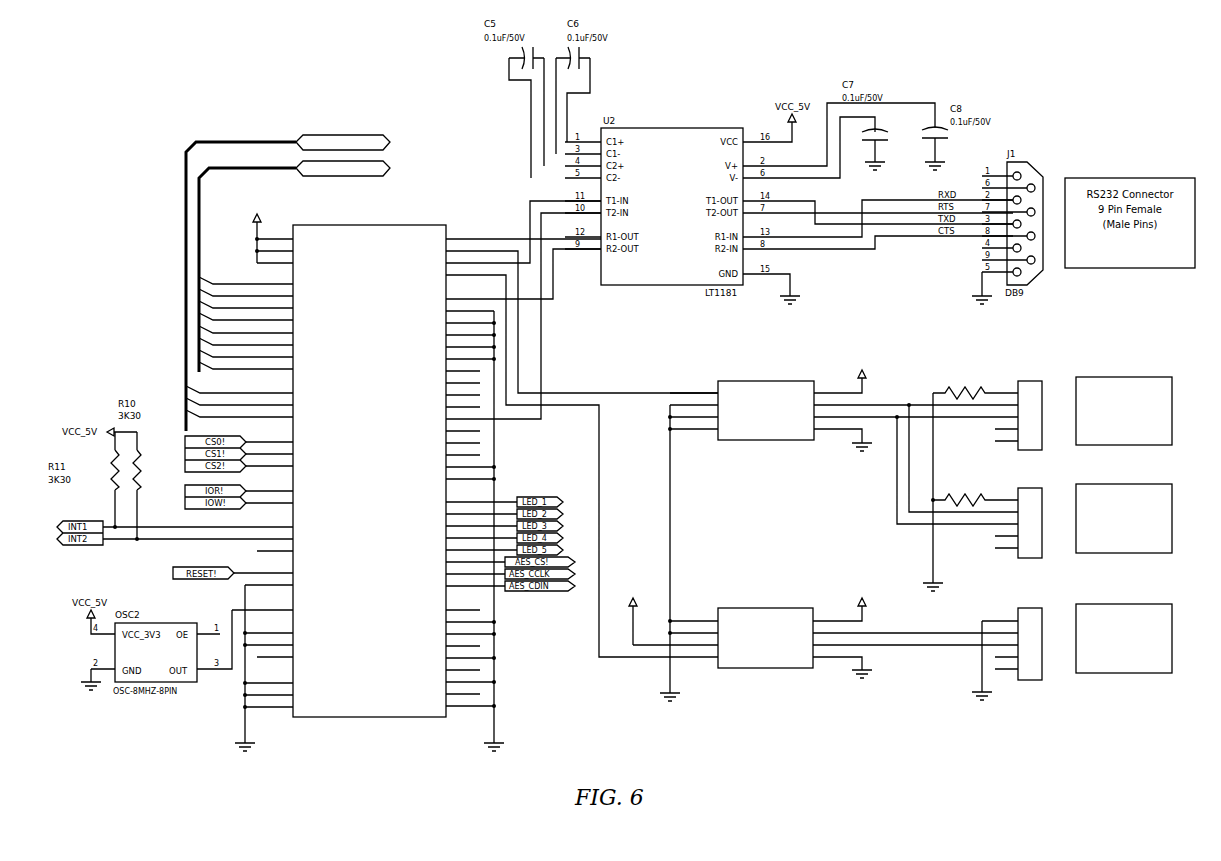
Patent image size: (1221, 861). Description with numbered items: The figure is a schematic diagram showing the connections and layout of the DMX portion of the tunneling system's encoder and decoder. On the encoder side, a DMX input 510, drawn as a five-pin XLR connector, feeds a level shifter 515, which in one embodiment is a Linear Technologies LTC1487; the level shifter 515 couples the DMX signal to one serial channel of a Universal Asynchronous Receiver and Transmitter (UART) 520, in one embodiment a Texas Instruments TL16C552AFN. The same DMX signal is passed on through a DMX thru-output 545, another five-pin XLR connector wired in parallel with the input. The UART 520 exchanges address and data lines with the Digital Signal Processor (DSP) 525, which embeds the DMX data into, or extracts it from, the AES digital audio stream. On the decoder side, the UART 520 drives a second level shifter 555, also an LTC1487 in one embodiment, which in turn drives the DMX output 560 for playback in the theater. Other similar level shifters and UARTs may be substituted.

The DMX input 510 is at (1103, 450).
The level shifter 515 is at (742, 445).
The Universal Asynchronous Receiver and Transmitter (UART) 520 is at (368, 717).
The Digital Signal Processor (DSP) 525 is at (395, 176).
The DMX thru-output 545 is at (1103, 558).
The level shifter 555 is at (745, 673).
The DMX output 560 is at (1103, 676).